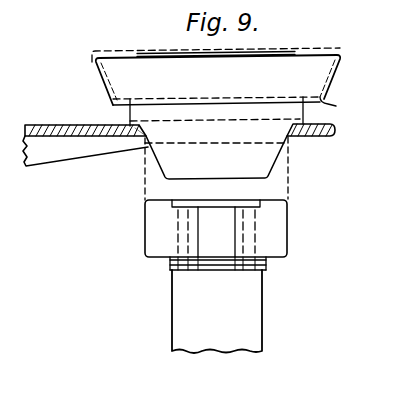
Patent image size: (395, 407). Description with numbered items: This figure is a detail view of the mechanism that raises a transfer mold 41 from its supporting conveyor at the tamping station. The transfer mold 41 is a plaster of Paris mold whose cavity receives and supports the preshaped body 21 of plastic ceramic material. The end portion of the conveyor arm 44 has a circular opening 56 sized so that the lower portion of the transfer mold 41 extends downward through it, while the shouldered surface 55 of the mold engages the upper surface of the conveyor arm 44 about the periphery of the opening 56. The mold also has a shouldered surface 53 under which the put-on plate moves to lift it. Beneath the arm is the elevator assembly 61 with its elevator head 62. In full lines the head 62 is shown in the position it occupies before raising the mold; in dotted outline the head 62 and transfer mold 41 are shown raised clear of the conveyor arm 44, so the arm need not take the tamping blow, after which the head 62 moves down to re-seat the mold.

The preshaped body 21 is at (156, 52).
The transfer mold 41 is at (96, 81).
The conveyor arm 44 is at (328, 138).
The shouldered surface 53 is at (327, 106).
The shouldered surface 55 is at (298, 137).
The circular opening 56 is at (137, 128).
The elevator assembly 61 is at (264, 322).
The elevator head 62 is at (143, 181).